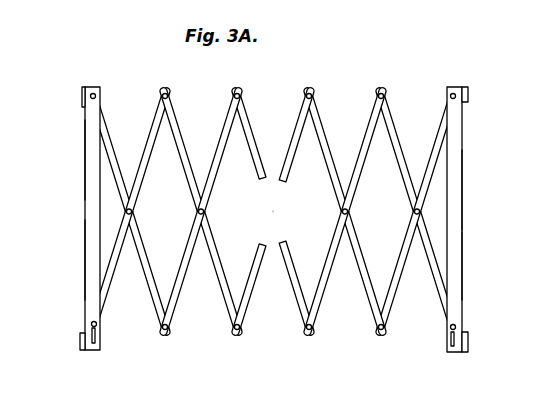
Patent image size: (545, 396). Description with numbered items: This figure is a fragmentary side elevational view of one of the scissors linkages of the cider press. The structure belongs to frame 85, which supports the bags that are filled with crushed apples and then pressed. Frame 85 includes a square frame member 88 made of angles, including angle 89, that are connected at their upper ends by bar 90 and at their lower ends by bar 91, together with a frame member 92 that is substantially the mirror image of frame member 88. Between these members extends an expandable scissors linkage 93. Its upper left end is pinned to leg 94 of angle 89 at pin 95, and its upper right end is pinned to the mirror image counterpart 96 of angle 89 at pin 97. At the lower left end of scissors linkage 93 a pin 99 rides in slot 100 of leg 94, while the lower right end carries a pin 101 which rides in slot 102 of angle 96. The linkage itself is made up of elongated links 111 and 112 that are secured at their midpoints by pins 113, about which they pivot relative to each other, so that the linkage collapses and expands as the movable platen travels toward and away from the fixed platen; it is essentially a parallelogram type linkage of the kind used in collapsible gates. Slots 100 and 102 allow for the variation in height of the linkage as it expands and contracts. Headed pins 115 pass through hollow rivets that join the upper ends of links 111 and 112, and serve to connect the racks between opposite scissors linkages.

The frame 85 is at (273, 195).
The square frame member 88 is at (85, 209).
The angle 89 is at (85, 248).
The bar 90 is at (85, 96).
The bar 91 is at (80, 342).
The frame member 92 is at (462, 232).
The expandable scissors linkage 93 is at (288, 244).
The leg 94 is at (88, 168).
The pin 95 is at (93, 93).
The mirror image counterpart of angle 96 is at (462, 192).
The pin 97 is at (453, 91).
The pin 99 is at (93, 320).
The slot 100 is at (100, 337).
The pin 101 is at (462, 320).
The slot 102 is at (447, 335).
The elongated link 111 is at (223, 127).
The elongated link 112 is at (213, 266).
The pin 113 is at (198, 212).
The headed pin 115 is at (237, 93).